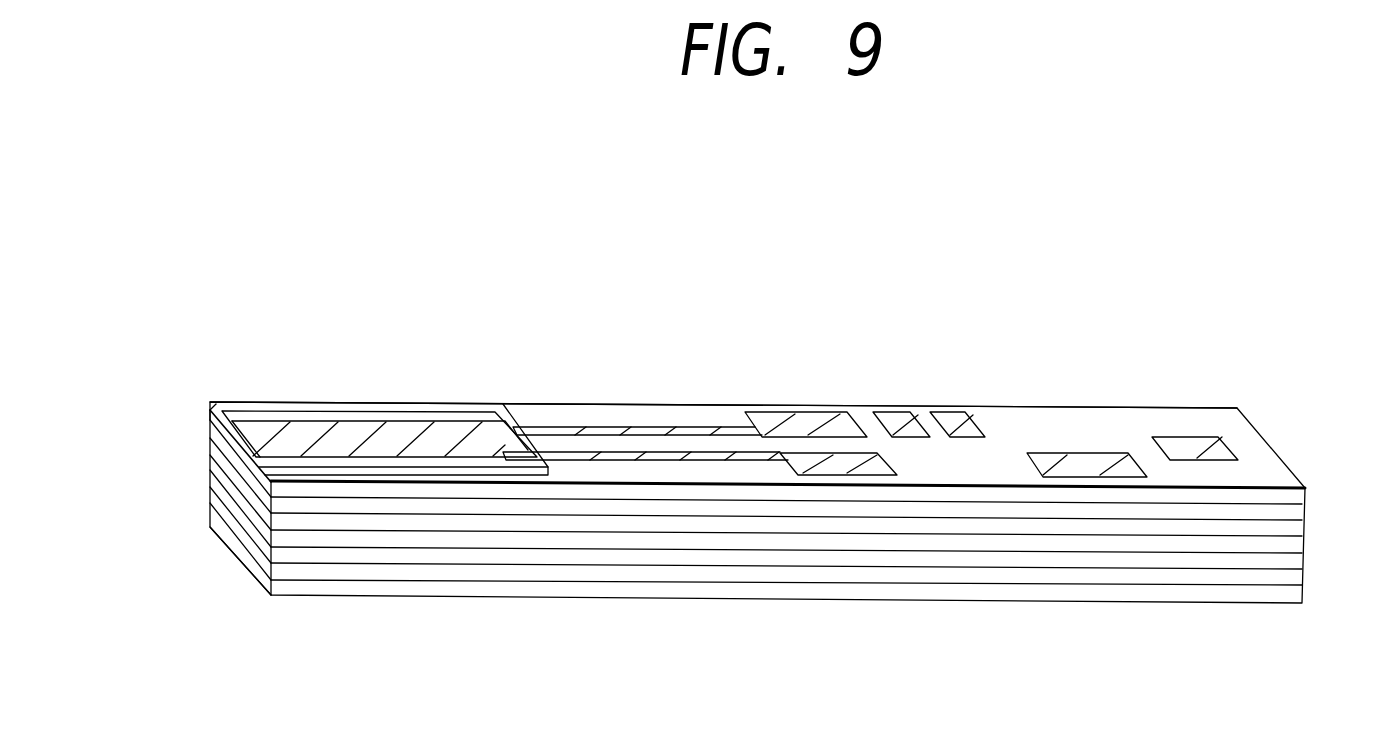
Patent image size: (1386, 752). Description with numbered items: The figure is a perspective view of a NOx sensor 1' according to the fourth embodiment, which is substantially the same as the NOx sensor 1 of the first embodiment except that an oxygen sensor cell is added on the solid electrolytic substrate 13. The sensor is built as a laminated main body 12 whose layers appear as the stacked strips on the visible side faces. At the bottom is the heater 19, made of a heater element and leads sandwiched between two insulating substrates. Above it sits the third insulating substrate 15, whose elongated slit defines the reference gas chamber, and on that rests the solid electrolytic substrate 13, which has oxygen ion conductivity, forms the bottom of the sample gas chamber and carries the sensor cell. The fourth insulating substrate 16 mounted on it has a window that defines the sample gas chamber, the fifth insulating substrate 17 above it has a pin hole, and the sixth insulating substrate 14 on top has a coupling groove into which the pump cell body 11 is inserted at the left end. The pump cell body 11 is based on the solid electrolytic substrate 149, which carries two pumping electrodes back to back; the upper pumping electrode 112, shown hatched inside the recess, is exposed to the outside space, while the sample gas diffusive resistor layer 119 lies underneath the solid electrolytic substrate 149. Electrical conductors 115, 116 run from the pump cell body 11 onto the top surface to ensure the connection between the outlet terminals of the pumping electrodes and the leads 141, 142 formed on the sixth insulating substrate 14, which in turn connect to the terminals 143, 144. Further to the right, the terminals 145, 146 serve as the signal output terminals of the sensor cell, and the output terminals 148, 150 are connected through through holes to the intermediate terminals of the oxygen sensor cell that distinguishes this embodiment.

The NOx sensor 1 is at (797, 475).
The NOx sensor 1' is at (726, 444).
The pump cell body 11 is at (337, 387).
The main body 12 is at (1037, 357).
The solid electrolytic substrate 13 is at (705, 543).
The sixth insulating substrate 14 is at (475, 493).
The third insulating substrate 15 is at (785, 558).
The fourth insulating substrate 16 is at (615, 525).
The fifth insulating substrate 17 is at (543, 512).
The heater 19 is at (1313, 566).
The pumping electrode 112 is at (410, 432).
The electrical conductor 115 is at (503, 450).
The electrical conductor 116 is at (560, 427).
The sample gas diffusive resistor layer 119 is at (228, 452).
The lead 141 is at (718, 457).
The lead 142 is at (655, 427).
The terminal 143 is at (845, 457).
The terminal 144 is at (793, 418).
The terminal 145 is at (1210, 440).
The terminal 146 is at (1110, 458).
The output terminal 148 is at (902, 417).
The solid electrolytic substrate 149 is at (248, 424).
The output terminal 150 is at (955, 417).